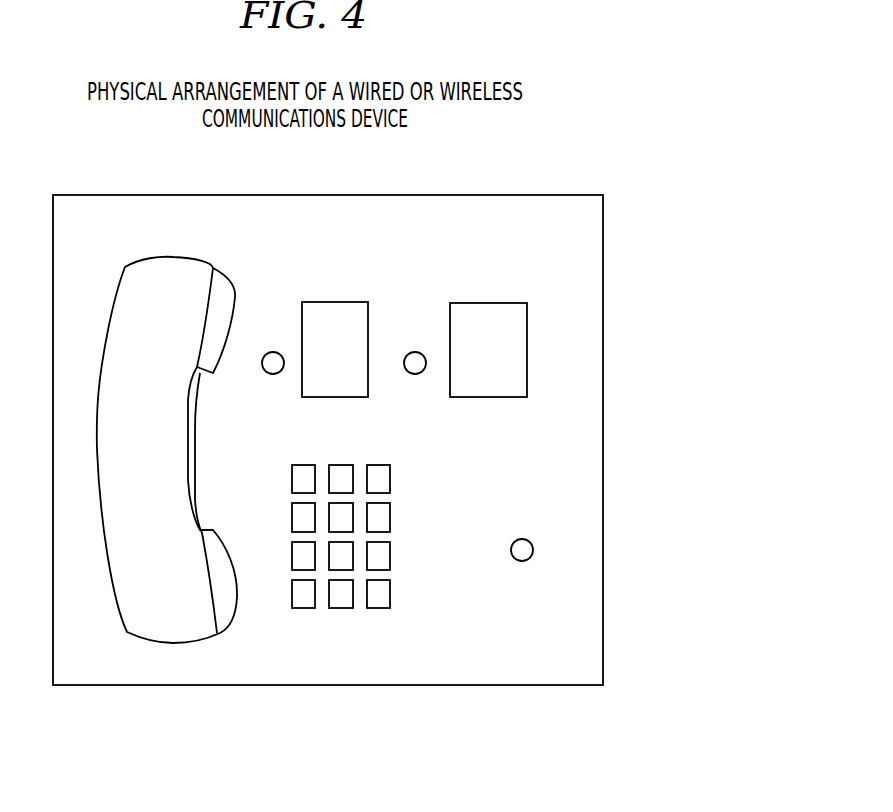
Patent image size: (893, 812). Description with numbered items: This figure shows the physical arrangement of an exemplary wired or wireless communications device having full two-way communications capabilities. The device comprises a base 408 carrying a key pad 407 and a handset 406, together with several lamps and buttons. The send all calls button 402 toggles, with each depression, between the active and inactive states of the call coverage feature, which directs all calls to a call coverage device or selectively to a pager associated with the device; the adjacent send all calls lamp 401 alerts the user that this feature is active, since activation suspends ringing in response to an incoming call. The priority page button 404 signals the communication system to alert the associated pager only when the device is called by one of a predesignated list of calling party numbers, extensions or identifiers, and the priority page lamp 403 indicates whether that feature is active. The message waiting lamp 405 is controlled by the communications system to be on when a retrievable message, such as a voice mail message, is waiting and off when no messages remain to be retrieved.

The send all calls lamp 401 is at (280, 318).
The send all calls button 402 is at (320, 302).
The priority page lamp 403 is at (410, 318).
The priority page button 404 is at (493, 303).
The message waiting lamp 405 is at (533, 550).
The handset 406 is at (157, 630).
The key pad 407 is at (397, 630).
The base 408 is at (603, 655).